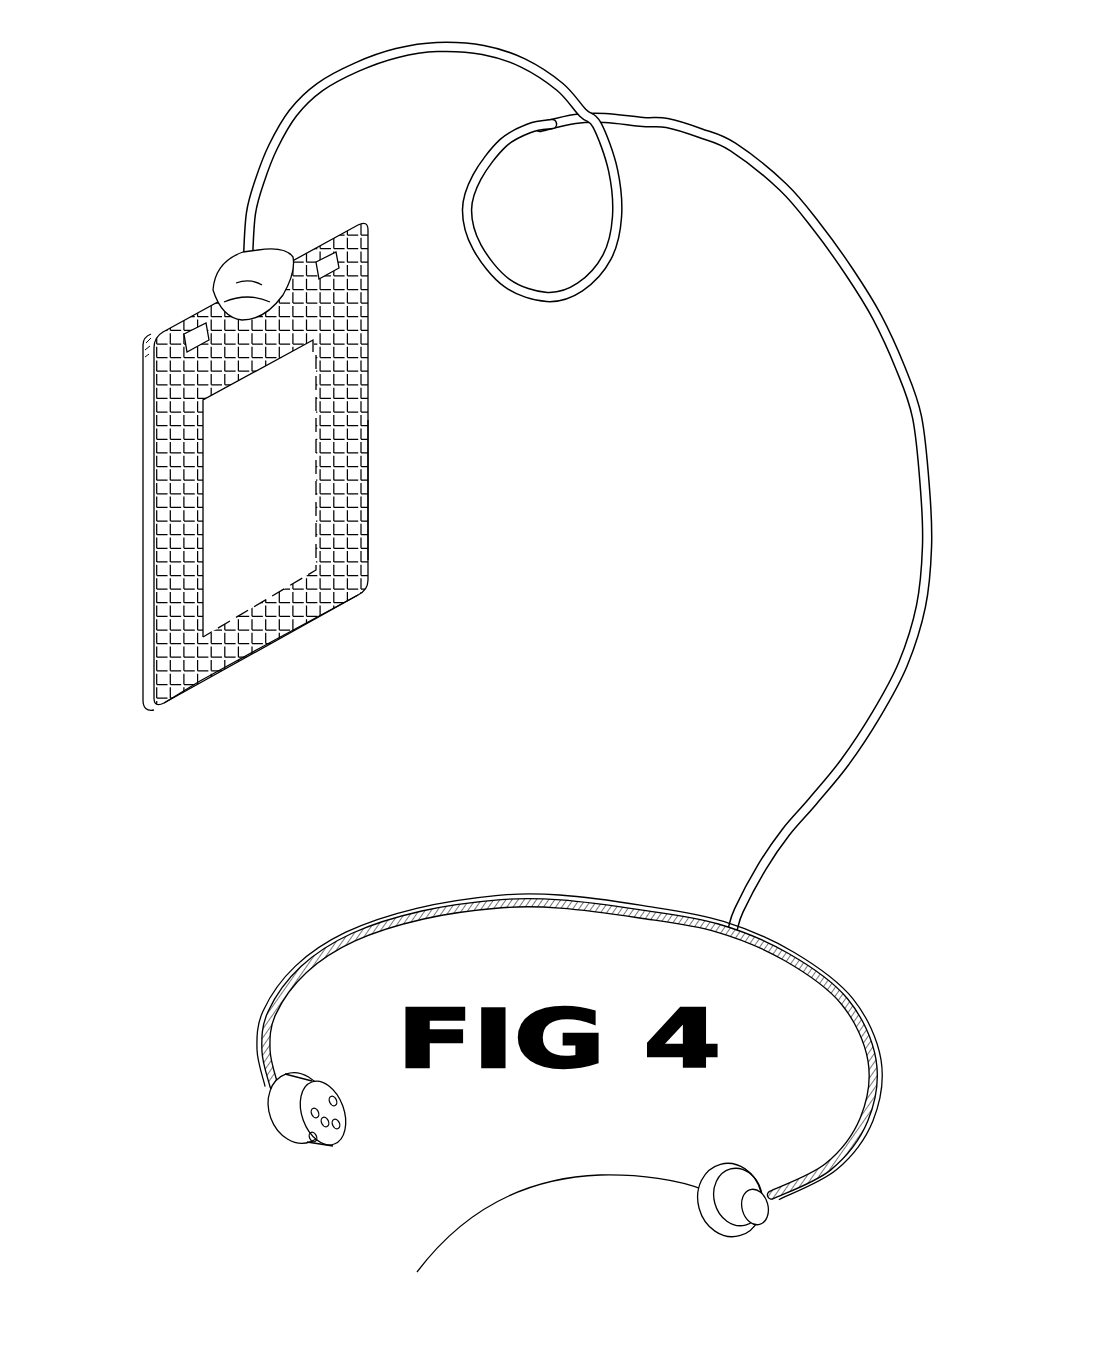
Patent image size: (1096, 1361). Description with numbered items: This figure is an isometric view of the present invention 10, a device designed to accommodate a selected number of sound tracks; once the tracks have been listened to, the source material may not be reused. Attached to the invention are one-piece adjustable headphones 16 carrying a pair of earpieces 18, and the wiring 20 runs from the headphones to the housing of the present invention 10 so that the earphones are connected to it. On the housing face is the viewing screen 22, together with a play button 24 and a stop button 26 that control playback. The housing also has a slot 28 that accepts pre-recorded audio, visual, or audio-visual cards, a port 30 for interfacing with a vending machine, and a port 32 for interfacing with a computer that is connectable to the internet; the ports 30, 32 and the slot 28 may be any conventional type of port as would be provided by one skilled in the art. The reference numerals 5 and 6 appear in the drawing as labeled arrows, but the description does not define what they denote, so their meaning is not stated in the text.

The present invention 10 is at (289, 450).
The section view direction 5 is at (385, 495).
The section view direction 6 is at (300, 650).
The adjustable headphones 16 is at (510, 895).
The earpieces 18 is at (338, 1125).
The wiring 20 is at (605, 120).
The viewing screen 22 is at (253, 450).
The play button 24 is at (195, 327).
The stop button 26 is at (330, 258).
The slot 28 is at (370, 415).
The port 30 is at (228, 683).
The port 32 is at (190, 700).